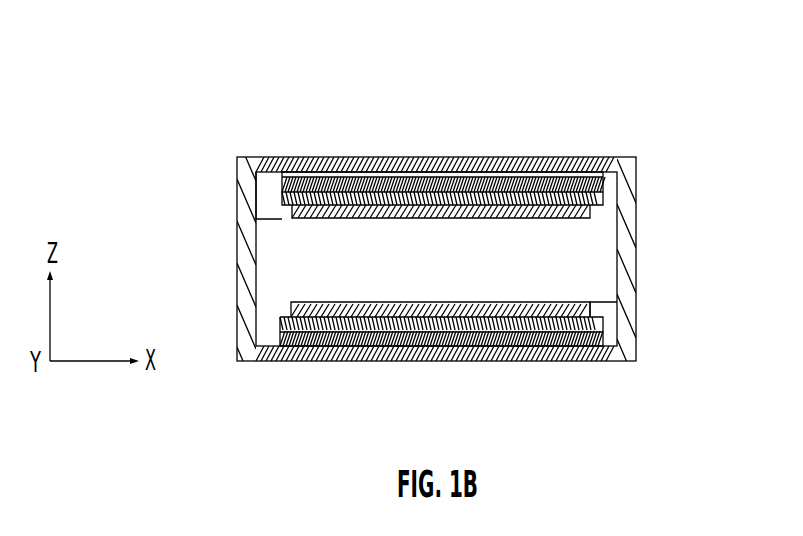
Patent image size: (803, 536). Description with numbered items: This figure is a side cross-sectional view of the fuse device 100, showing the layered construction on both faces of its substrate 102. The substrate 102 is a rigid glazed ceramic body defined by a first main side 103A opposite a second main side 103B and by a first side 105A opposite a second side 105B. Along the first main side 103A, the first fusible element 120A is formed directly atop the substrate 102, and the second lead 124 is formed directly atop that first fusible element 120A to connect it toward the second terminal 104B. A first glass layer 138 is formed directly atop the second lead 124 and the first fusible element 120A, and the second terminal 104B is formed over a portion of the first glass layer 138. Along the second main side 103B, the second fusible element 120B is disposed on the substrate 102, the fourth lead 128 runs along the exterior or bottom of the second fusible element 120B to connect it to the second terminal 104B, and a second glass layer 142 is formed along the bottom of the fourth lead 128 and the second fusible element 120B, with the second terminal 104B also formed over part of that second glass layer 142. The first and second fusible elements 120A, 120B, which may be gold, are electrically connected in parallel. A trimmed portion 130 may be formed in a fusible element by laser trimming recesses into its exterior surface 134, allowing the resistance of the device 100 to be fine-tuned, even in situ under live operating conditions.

The fuse device 100 is at (212, 68).
The substrate 102 is at (608, 248).
The first main side 103A is at (263, 215).
The second main side 103B is at (607, 305).
The second terminal 104B is at (410, 165).
The first side 105A is at (252, 262).
The second side 105B is at (620, 270).
The first fusible element 120A is at (555, 210).
The second fusible element 120B is at (572, 325).
The second lead 124 is at (511, 205).
The fourth lead 128 is at (313, 338).
The trimmed portion 130 is at (453, 195).
The exterior surface 134 is at (340, 203).
The first glass layer 138 is at (297, 176).
The second glass layer 142 is at (437, 350).